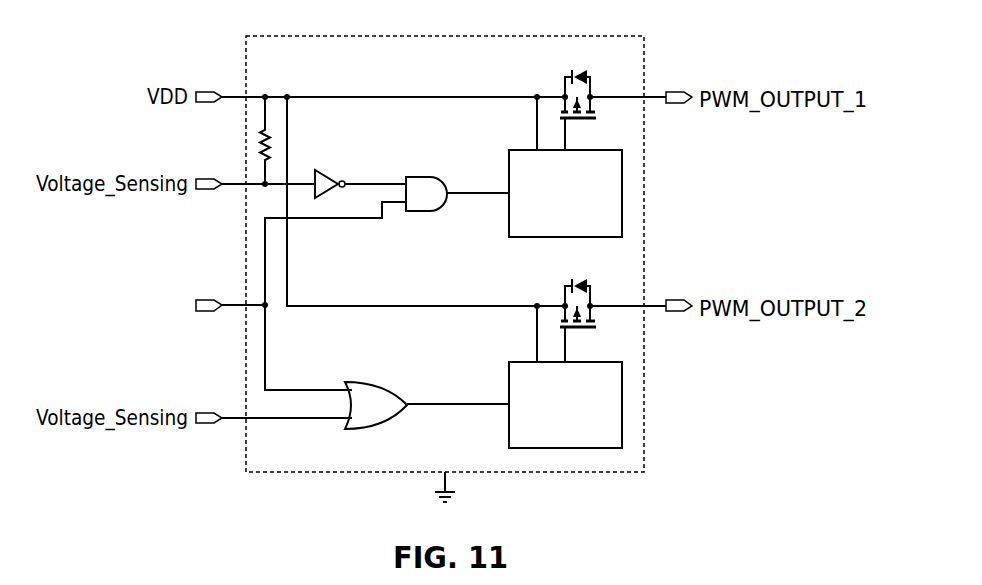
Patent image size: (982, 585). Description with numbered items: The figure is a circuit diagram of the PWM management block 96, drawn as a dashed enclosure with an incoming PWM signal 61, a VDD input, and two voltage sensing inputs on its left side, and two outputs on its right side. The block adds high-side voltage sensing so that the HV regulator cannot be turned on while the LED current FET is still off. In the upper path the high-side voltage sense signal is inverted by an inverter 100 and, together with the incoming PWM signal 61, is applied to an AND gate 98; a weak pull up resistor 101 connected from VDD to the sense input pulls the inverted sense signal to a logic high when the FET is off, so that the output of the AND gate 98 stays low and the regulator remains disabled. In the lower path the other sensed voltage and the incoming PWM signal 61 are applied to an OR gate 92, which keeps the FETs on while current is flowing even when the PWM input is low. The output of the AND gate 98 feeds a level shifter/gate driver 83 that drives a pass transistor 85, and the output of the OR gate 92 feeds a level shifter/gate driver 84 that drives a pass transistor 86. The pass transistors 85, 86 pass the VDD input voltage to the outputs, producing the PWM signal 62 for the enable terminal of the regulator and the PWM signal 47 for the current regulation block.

The PWM signal 47 is at (676, 298).
The incoming PWM signal 61 is at (208, 298).
The PWM signal 62 is at (676, 90).
The level shifter/gate driver 83 is at (509, 172).
The level shifter/gate driver 84 is at (509, 386).
The pass transistor 85 is at (594, 108).
The pass transistor 86 is at (594, 320).
The OR gate 92 is at (368, 381).
The PWM management block 96 is at (644, 410).
The AND gate 98 is at (413, 175).
The inverter 100 is at (332, 167).
The weak pull up resistor 101 is at (260, 146).